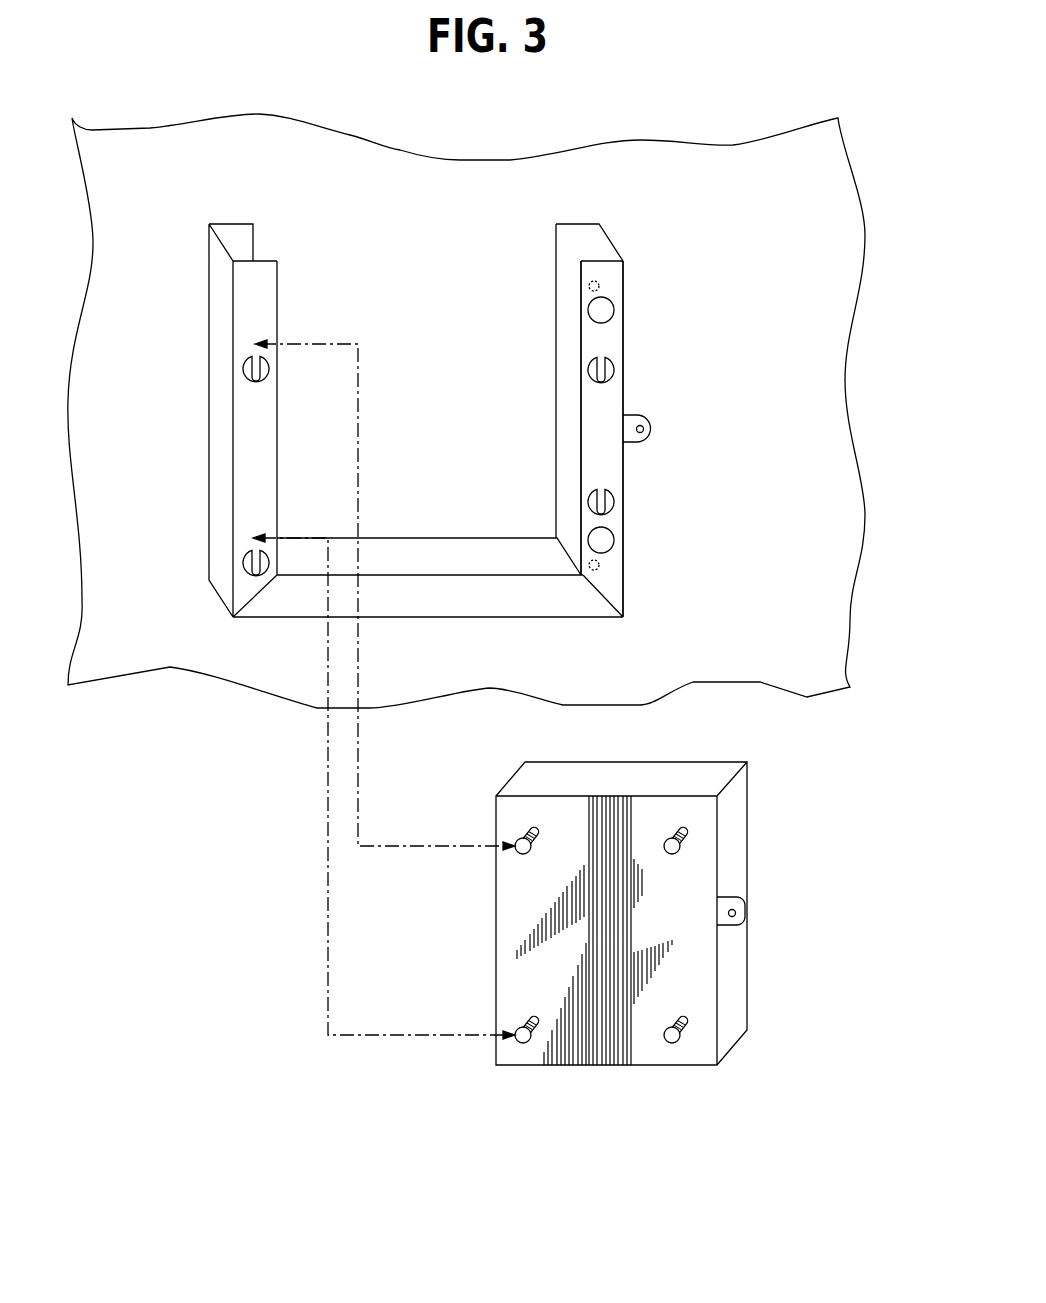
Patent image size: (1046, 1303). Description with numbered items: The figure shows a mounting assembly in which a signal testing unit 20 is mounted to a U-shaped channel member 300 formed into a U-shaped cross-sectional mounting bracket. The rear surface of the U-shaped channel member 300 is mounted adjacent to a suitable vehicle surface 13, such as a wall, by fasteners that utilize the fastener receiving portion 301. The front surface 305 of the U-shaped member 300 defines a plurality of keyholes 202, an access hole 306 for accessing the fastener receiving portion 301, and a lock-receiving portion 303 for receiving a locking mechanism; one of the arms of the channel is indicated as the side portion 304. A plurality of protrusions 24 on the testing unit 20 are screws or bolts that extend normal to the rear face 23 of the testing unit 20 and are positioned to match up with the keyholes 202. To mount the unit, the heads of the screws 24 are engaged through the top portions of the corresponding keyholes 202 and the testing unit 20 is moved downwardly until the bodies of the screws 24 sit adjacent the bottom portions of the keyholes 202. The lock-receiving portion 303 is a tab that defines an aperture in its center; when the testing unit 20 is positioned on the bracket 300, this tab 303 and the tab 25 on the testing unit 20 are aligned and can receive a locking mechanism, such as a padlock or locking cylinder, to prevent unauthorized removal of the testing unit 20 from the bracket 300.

The vehicle surface 13 is at (768, 153).
The U-shaped channel member 300 is at (498, 627).
The keyholes 202 is at (252, 352).
The side arm of bracket 304 is at (581, 389).
The front surface 305 is at (603, 430).
The fastener receiving portion 301 is at (594, 280).
The access hole 306 is at (606, 310).
The lock-receiving portion 303 is at (654, 422).
The signal testing unit 20 is at (713, 757).
The rear face 23 is at (700, 1060).
The protrusions 24 is at (674, 846).
The tab 25 is at (750, 898).